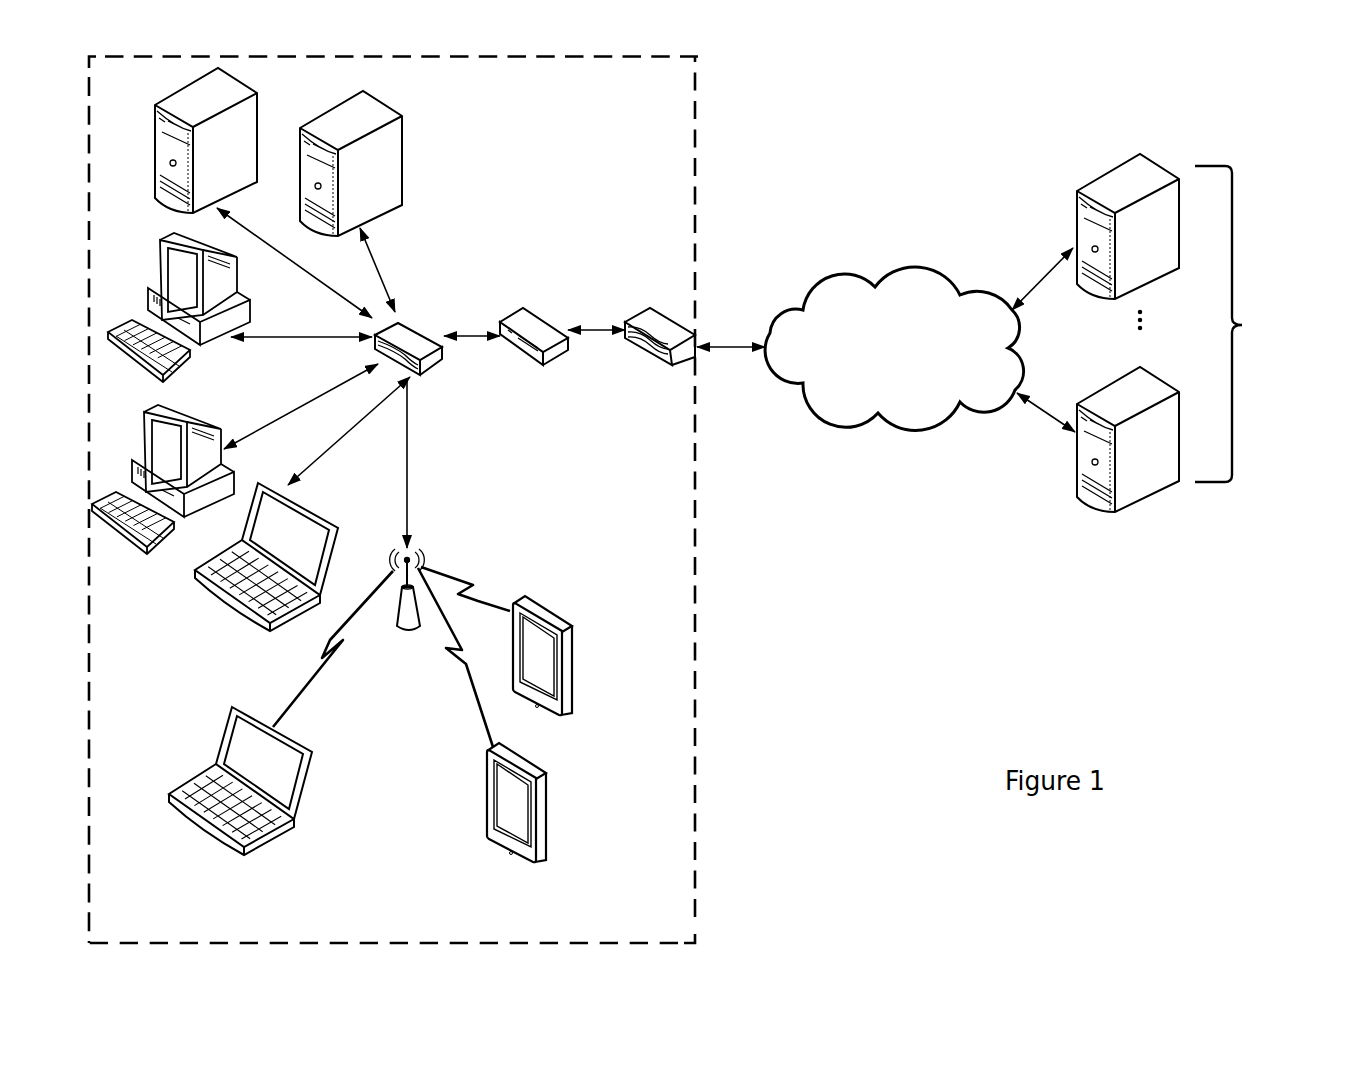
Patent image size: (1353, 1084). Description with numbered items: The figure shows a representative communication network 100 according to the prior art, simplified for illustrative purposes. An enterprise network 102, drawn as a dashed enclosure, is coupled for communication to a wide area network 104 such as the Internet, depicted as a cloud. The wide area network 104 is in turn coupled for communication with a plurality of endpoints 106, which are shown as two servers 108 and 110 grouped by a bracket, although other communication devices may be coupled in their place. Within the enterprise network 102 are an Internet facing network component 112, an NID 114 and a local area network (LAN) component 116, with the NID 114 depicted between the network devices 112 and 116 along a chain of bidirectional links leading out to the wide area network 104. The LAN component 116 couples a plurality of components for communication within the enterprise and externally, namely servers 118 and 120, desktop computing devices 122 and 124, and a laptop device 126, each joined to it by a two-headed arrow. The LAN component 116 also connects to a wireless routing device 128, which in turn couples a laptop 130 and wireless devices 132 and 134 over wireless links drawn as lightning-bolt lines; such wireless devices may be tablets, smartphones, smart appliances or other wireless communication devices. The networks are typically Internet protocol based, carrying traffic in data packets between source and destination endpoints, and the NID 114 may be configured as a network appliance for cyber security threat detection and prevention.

The representative communication network 100 is at (825, 168).
The enterprise network 102 is at (595, 114).
The wide area network 104 is at (883, 371).
The endpoints 106 is at (1229, 324).
The server 108 is at (1118, 259).
The server 110 is at (1123, 457).
The Internet facing network component 112 is at (659, 318).
The NID 114 is at (534, 320).
The local area network (LAN) component 116 is at (409, 326).
The server 118 is at (354, 197).
The server 120 is at (198, 161).
The desktop computing device 122 is at (201, 307).
The desktop computing device 124 is at (168, 470).
The laptop device 126 is at (283, 557).
The wireless routing device 128 is at (428, 578).
The laptop 130 is at (259, 781).
The wireless device 132 is at (561, 655).
The wireless device 134 is at (539, 802).